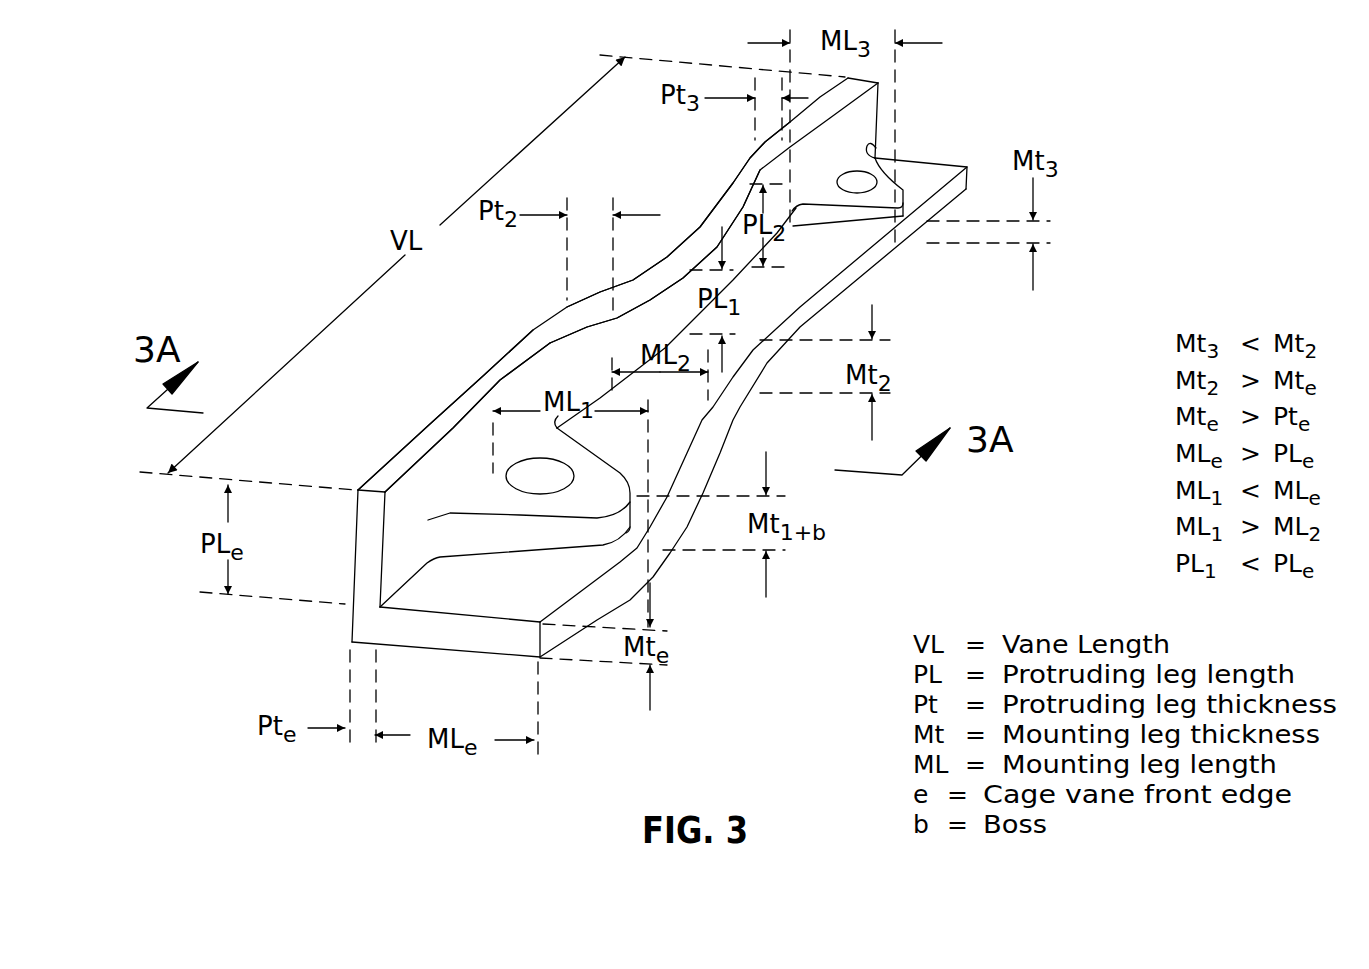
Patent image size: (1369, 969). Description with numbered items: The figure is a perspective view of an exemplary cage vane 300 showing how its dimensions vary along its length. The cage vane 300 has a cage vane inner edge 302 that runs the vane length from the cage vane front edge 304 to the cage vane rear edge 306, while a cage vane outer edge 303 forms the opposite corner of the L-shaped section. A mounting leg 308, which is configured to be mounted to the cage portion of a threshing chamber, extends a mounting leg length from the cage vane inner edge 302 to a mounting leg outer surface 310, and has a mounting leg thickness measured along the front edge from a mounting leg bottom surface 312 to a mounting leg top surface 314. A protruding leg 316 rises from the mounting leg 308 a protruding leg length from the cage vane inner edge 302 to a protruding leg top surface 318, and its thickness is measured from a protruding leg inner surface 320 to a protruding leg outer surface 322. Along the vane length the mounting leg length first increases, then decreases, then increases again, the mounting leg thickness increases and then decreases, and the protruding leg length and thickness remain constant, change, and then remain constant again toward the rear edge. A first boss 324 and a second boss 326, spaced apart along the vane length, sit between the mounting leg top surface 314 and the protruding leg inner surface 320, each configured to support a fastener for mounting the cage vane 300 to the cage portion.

The cage vane 300 is at (397, 158).
The cage vane inner edge 302 is at (748, 268).
The cage vane outer edge 303 is at (352, 642).
The cage vane front edge 304 is at (415, 632).
The cage vane rear edge 306 is at (878, 118).
The mounting leg 308 is at (790, 287).
The mounting leg outer surface 310 is at (718, 427).
The mounting leg bottom surface 312 is at (442, 650).
The mounting leg top surface 314 is at (493, 590).
The protruding leg 316 is at (748, 178).
The protruding leg top surface 318 is at (480, 400).
The protruding leg inner surface 320 is at (543, 380).
The protruding leg outer surface 322 is at (405, 450).
The first boss 324 is at (613, 530).
The second boss 326 is at (903, 192).